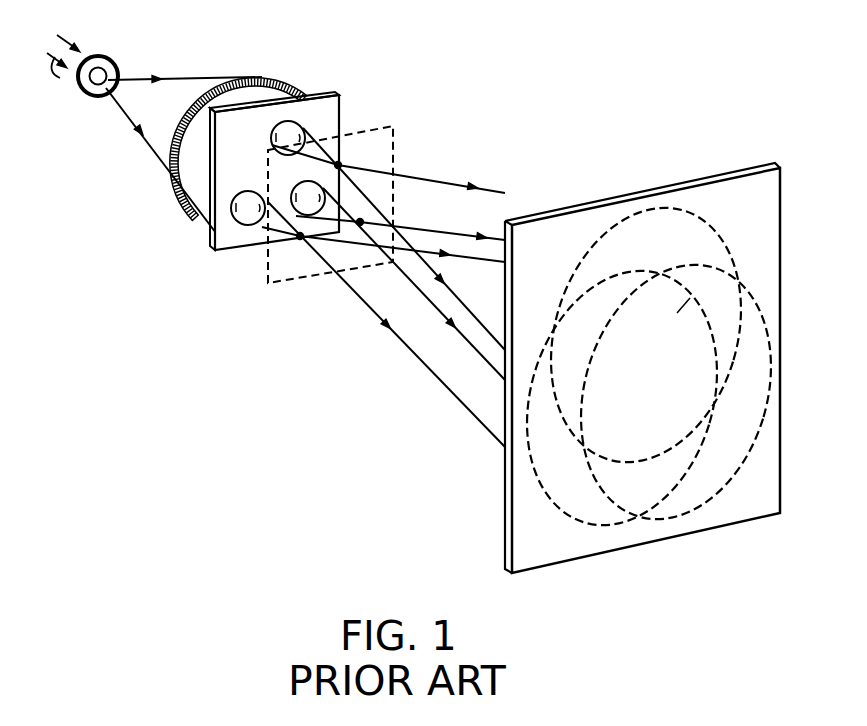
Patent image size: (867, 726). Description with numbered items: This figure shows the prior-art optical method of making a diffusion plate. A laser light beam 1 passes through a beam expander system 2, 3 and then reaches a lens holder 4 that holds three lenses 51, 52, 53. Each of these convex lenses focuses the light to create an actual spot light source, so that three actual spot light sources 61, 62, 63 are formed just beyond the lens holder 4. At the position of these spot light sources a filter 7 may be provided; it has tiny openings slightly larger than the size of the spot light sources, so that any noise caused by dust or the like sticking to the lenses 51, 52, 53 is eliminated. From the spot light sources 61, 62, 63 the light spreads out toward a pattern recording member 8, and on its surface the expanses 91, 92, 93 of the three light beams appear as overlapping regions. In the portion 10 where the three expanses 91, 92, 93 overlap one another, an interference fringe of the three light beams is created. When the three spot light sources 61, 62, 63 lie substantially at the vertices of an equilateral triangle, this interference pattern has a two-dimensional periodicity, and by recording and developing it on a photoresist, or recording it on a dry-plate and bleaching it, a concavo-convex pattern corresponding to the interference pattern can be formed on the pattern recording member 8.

The laser light beam 1 is at (63, 68).
The beam expander system 2 is at (105, 56).
The beam expander system 3 is at (267, 78).
The lens holder 4 is at (320, 97).
The lens 51 is at (273, 136).
The lens 52 is at (233, 214).
The lens 53 is at (293, 188).
The actual spot light source 61 is at (340, 163).
The actual spot light source 62 is at (299, 240).
The actual spot light source 63 is at (362, 220).
The filter 7 is at (395, 127).
The pattern recording member 8 is at (618, 197).
The expanse of light beam 91 is at (653, 207).
The expanse of light beam 92 is at (532, 462).
The expanse of light beam 93 is at (598, 482).
The overlap portion 10 is at (690, 298).